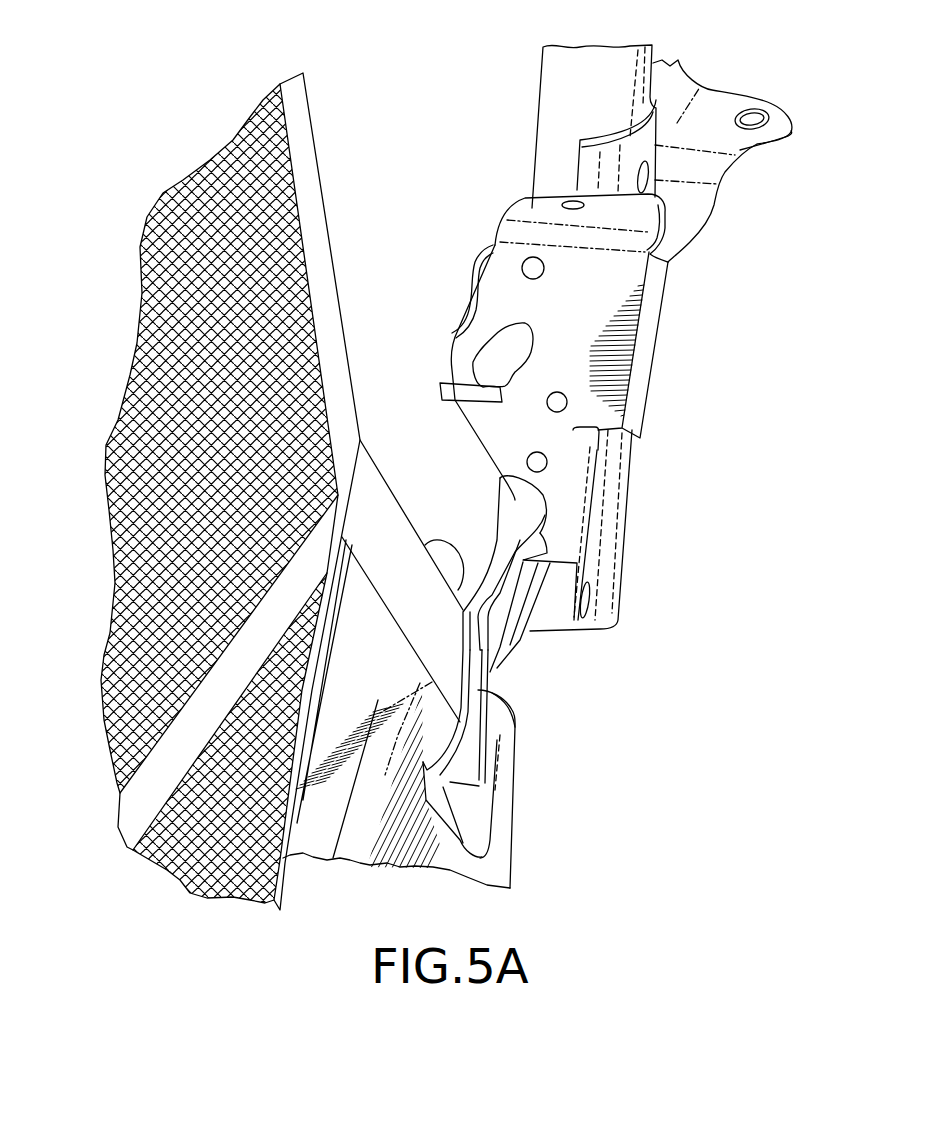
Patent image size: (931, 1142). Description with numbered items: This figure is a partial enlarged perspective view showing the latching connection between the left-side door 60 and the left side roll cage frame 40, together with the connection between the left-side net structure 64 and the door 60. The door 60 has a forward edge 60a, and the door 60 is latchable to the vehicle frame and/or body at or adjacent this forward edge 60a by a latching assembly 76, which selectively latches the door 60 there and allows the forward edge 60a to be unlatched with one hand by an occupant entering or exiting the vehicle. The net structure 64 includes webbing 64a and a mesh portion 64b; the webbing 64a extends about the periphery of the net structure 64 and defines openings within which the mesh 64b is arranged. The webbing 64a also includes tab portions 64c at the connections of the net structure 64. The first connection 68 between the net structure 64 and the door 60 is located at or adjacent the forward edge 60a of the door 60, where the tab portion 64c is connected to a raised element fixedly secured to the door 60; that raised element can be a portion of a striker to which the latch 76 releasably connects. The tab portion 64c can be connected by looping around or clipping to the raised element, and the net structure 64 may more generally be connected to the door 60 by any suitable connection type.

The left side roll cage frame 40 is at (618, 510).
The door 60 is at (460, 791).
The forward edge 60a is at (510, 787).
The net structure 64 is at (282, 498).
The webbing 64a is at (318, 255).
The mesh portion 64b is at (172, 402).
The tab portion 64c is at (380, 545).
The first connection 68 is at (404, 480).
The latching assembly 76 is at (652, 575).